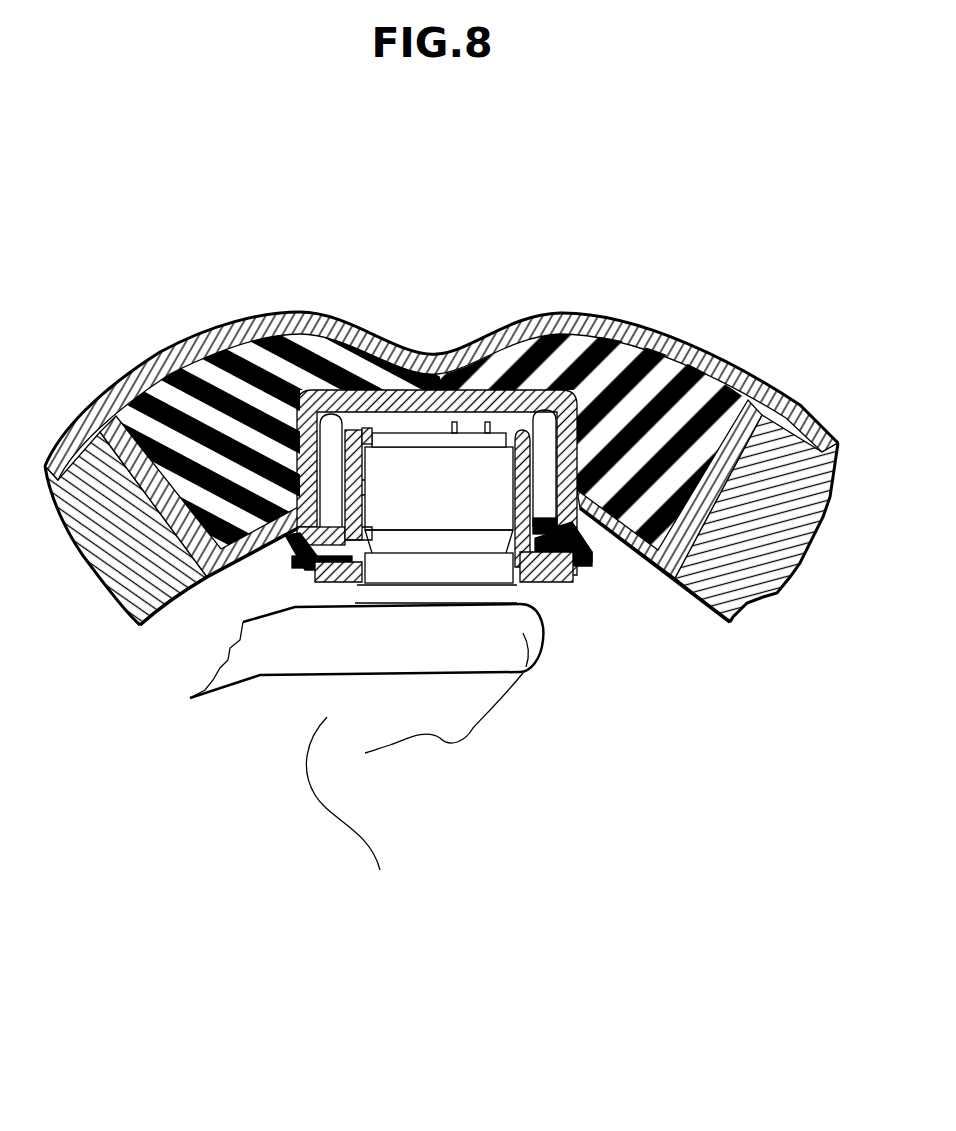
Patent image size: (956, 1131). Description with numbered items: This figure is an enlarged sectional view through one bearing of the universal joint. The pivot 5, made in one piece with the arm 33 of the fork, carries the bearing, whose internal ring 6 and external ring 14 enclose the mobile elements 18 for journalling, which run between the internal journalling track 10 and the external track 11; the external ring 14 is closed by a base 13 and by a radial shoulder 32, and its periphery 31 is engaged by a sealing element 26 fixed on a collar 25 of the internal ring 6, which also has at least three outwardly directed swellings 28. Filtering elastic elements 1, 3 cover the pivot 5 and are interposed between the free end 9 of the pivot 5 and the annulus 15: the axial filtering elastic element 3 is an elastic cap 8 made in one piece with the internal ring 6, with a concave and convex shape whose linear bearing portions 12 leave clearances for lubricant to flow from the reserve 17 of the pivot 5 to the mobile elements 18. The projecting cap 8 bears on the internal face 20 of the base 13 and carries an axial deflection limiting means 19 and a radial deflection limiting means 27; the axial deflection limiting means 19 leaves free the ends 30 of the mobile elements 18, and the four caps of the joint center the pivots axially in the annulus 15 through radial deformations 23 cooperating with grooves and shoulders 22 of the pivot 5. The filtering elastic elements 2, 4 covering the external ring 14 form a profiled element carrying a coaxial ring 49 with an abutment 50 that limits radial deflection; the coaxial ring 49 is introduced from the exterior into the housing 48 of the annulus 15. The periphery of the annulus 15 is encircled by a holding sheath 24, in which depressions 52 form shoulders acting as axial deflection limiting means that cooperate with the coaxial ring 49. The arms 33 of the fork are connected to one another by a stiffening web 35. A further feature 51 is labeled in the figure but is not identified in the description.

The filtering elastic element 1 is at (358, 376).
The filtering elastic element 2 is at (730, 393).
The axial filtering elastic element 3 is at (522, 380).
The filtering elastic element 4 is at (562, 330).
The pivot 5 is at (452, 530).
The internal ring 6 is at (520, 505).
The elastic cap 8 is at (478, 392).
The free end 9 is at (433, 437).
The internal journalling track 10 is at (318, 590).
The external track 11 is at (290, 532).
The linear bearing portions 12 is at (510, 385).
The base 13 is at (433, 395).
The external ring 14 is at (522, 478).
The annulus 15 is at (767, 573).
The reserve 17 is at (598, 322).
The mobile elements 18 is at (281, 461).
The axial deflection limiting means 19 is at (455, 403).
The internal face 20 is at (278, 441).
The grooves and shoulders 22 is at (390, 534).
The radial deformations 23 is at (331, 592).
The holding sheath 24 is at (102, 407).
The collar 25 is at (572, 585).
The sealing element 26 is at (603, 640).
The radial deflection limiting means 27 is at (372, 432).
The outwardly directed swellings 28 is at (362, 486).
The ends of the mobile elements 30 is at (656, 335).
The periphery 31 is at (259, 388).
The radial shoulder 32 is at (548, 573).
The arm 33 is at (452, 713).
The stiffening web 35 is at (354, 817).
The housing 48 is at (207, 577).
The coaxial ring 49 is at (700, 500).
The abutment 50 is at (618, 528).
The top wall 51 is at (755, 420).
The depressions 52 is at (440, 358).